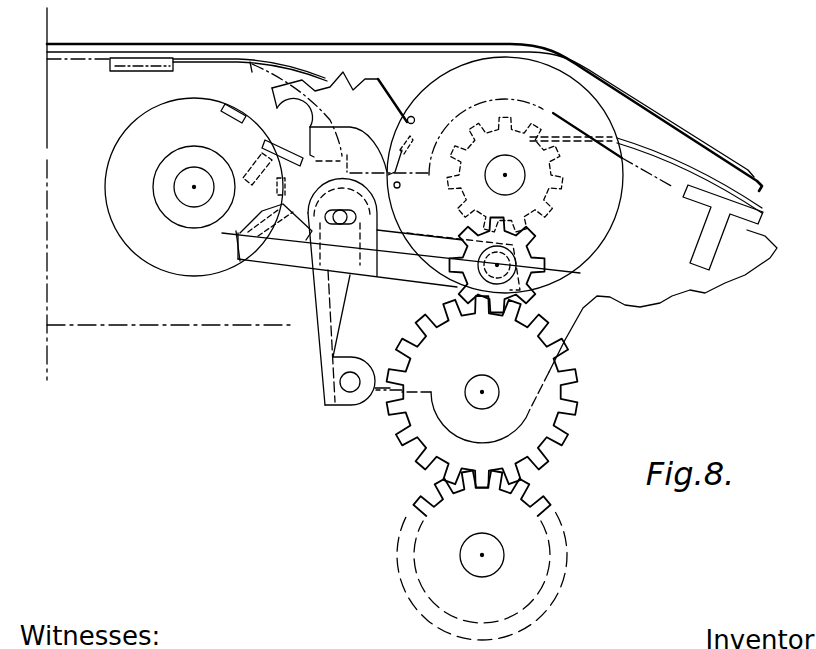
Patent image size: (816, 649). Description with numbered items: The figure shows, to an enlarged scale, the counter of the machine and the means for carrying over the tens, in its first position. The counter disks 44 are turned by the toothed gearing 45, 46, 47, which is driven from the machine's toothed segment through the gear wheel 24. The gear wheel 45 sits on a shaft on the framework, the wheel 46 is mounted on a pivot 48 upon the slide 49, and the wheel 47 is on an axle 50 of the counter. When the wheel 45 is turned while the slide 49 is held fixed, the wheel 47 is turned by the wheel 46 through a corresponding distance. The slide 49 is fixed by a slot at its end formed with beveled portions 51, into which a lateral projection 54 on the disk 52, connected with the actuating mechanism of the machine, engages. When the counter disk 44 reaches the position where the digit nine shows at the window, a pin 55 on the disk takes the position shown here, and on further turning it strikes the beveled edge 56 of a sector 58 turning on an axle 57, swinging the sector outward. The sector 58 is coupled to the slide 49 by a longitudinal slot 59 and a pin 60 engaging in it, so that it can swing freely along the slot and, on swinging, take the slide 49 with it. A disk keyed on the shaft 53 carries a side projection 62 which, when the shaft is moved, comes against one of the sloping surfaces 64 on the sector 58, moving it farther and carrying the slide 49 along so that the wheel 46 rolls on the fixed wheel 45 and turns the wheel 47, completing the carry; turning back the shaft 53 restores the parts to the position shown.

The gear wheel 24 is at (524, 490).
The counter disk 44 is at (623, 205).
The gear wheel 45 is at (577, 402).
The toothed wheel 46 is at (541, 268).
The toothed wheel 47 is at (562, 184).
The pivot 48 is at (508, 269).
The slide 49 is at (395, 253).
The axle 50 is at (516, 165).
The beveled portions 51 is at (268, 214).
The disk 52 is at (165, 250).
The shaft 53 is at (193, 186).
The lateral projection 54 is at (242, 236).
The pin 55 is at (415, 119).
The beveled edge 56 is at (402, 154).
The axle 57 is at (349, 392).
The sector 58 is at (328, 300).
The longitudinal slot 59 is at (342, 292).
The pin 60 is at (338, 210).
The side projection 62 is at (237, 120).
The sloping surfaces 64 is at (280, 150).